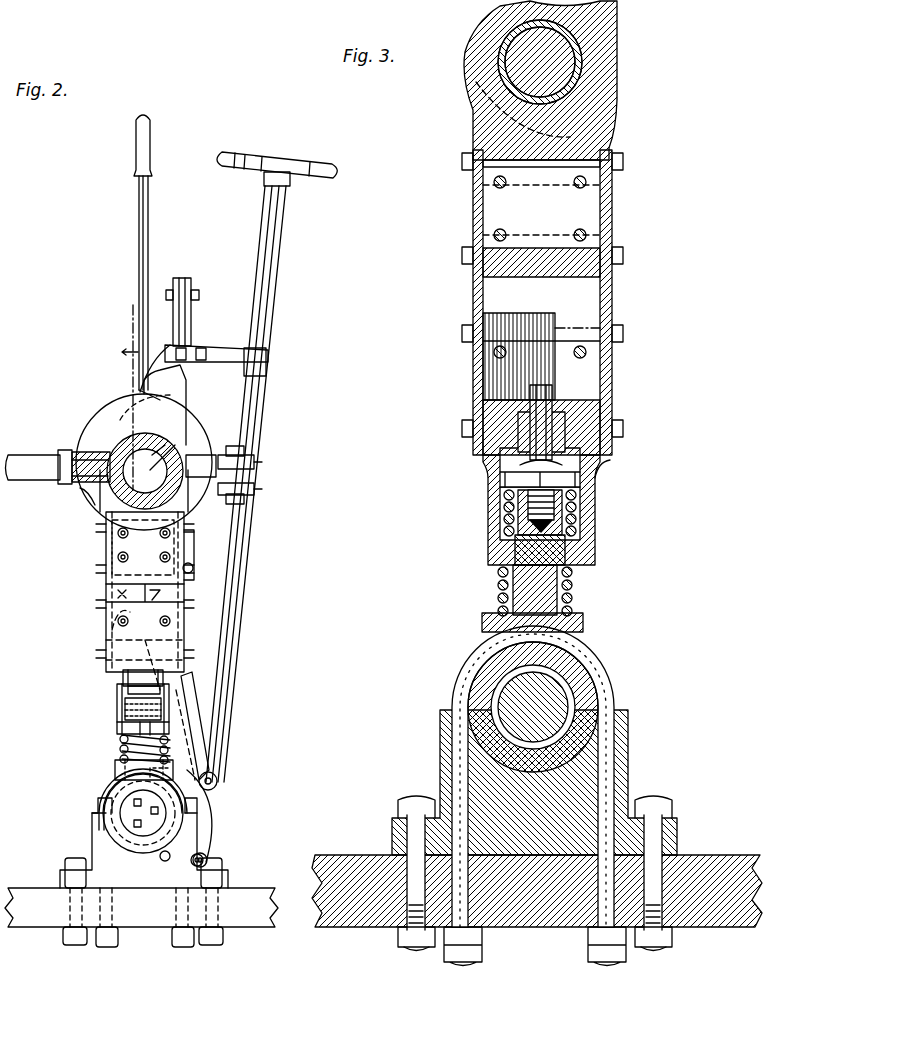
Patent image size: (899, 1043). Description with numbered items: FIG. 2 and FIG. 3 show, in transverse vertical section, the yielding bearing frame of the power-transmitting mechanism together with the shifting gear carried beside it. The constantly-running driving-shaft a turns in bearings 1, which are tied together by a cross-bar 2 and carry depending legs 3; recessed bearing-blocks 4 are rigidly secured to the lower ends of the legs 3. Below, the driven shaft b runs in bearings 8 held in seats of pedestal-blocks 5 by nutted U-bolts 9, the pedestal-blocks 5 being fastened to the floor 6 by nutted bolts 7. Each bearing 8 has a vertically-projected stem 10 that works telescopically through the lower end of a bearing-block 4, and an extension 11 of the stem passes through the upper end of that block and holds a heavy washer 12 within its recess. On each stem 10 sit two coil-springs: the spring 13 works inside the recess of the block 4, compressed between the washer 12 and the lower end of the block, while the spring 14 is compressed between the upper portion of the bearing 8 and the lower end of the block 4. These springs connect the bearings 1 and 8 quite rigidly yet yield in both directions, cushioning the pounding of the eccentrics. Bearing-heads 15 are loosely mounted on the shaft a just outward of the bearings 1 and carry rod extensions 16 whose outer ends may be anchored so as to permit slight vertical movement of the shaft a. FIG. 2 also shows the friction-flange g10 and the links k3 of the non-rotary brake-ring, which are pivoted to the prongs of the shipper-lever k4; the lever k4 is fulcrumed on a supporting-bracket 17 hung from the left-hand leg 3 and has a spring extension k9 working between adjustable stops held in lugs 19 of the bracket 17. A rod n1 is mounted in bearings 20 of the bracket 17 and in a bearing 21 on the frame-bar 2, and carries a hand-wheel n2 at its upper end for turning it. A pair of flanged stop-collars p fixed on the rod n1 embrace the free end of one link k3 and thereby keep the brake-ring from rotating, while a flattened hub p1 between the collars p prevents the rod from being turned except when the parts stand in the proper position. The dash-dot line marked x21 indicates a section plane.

In FIG. 2, the bearings 1 is at (175, 378).
In FIG. 3, the bearings 1 is at (475, 88).
In FIG. 2, the cross-bar 2 is at (190, 280).
In FIG. 2, the depending legs 3 is at (106, 594).
In FIG. 3, the depending legs 3 is at (615, 305).
In FIG. 2, the recessed bearing-blocks 4 is at (117, 724).
In FIG. 3, the recessed bearing-blocks 4 is at (612, 462).
In FIG. 2, the pedestal-blocks 5 is at (200, 835).
In FIG. 3, the pedestal-blocks 5 is at (585, 787).
In FIG. 2, the floor 6 is at (147, 927).
In FIG. 3, the floor 6 is at (338, 928).
In FIG. 2, the nutted bolt 7 is at (65, 866).
In FIG. 3, the nutted bolt 7 is at (674, 802).
In FIG. 2, the bearings 8 is at (135, 848).
In FIG. 3, the bearings 8 is at (583, 685).
In FIG. 2, the U-bolts 9 is at (101, 800).
In FIG. 3, the U-bolts 9 is at (465, 670).
In FIG. 2, the stems 10 is at (160, 740).
In FIG. 3, the stems 10 is at (582, 560).
In FIG. 2, the extensions 11 is at (123, 675).
In FIG. 3, the extensions 11 is at (528, 463).
In FIG. 2, the heavy washers 12 is at (163, 690).
In FIG. 3, the heavy washers 12 is at (510, 477).
In FIG. 2, the coil-spring 13 is at (128, 697).
In FIG. 3, the coil-spring 13 is at (598, 505).
In FIG. 2, the coil-spring 14 is at (125, 740).
In FIG. 3, the coil-spring 14 is at (497, 606).
In FIG. 2, the bearing-heads 15 is at (170, 452).
In FIG. 2, the rod extension 16 is at (38, 478).
In FIG. 2, the supporting-bracket 17 is at (185, 682).
In FIG. 2, the lugs 19 is at (192, 570).
In FIG. 2, the bearings 20 is at (218, 781).
In FIG. 2, the bearing 21 is at (268, 362).
In FIG. 2, the driving-shaft a is at (165, 485).
In FIG. 3, the driving-shaft a is at (568, 62).
In FIG. 3, the driven shaft b is at (515, 712).
In FIG. 2, the links k3 is at (200, 456).
In FIG. 2, the shipper-lever k4 is at (146, 243).
In FIG. 2, the spring extension k9 is at (192, 548).
In FIG. 2, the friction-flange g10 is at (71, 522).
In FIG. 2, the rod n1 is at (255, 425).
In FIG. 2, the hand-wheel n2 is at (345, 170).
In FIG. 2, the flanged stop-collars p is at (262, 490).
In FIG. 2, the flattened hub p1 is at (246, 452).
In FIG. 2, the axis line x21 is at (124, 396).